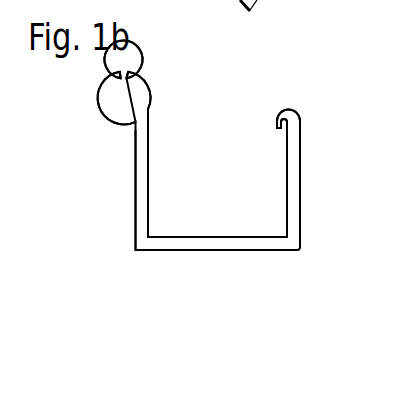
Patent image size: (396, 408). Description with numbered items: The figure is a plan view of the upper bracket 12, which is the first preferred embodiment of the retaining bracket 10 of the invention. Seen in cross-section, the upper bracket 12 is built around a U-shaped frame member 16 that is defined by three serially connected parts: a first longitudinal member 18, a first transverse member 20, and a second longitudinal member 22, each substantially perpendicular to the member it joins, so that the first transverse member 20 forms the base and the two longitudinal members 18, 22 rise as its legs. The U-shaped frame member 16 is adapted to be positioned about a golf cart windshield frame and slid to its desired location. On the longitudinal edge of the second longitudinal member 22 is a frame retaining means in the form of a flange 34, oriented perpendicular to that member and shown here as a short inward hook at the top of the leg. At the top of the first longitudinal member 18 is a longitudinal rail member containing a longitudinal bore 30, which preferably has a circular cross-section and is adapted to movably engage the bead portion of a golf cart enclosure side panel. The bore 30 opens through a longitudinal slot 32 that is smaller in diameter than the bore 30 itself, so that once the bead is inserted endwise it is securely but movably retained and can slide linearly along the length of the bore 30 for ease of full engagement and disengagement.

The retaining bracket 10 is at (265, 31).
The upper bracket 12 is at (284, 50).
The U-shaped frame member 16 is at (188, 148).
The first longitudinal member 18 is at (135, 175).
The first transverse member 20 is at (205, 252).
The second longitudinal member 22 is at (300, 191).
The longitudinal bore 30 is at (118, 97).
The longitudinal slot 32 is at (123, 73).
The flange 34 is at (293, 108).